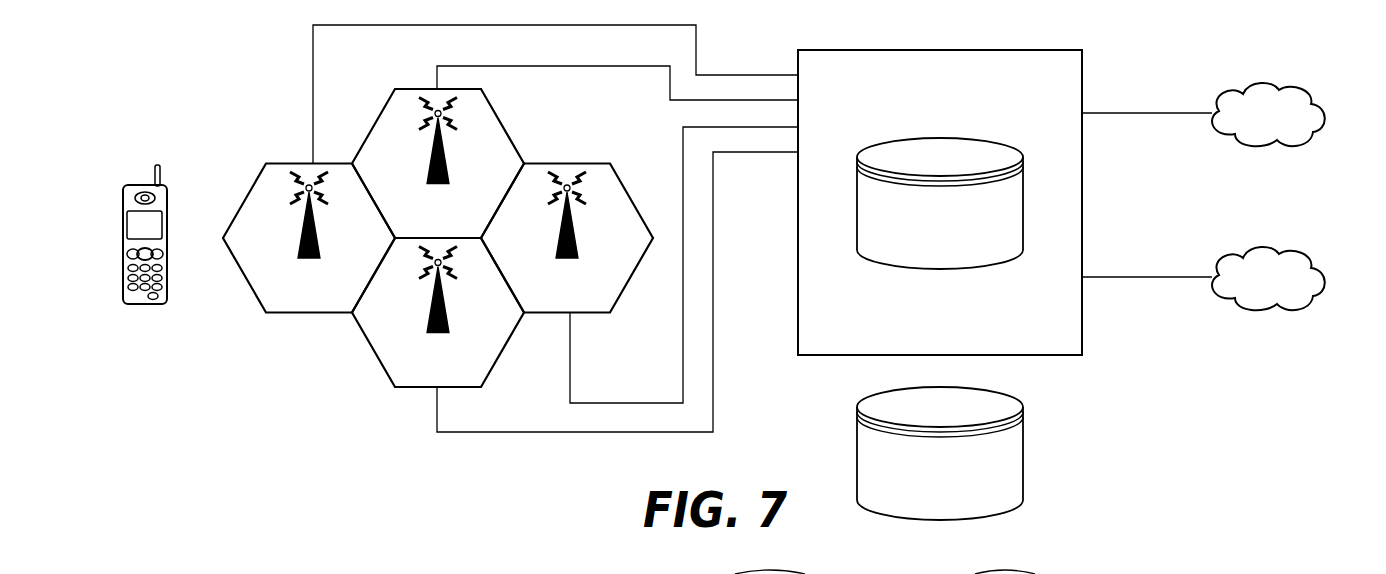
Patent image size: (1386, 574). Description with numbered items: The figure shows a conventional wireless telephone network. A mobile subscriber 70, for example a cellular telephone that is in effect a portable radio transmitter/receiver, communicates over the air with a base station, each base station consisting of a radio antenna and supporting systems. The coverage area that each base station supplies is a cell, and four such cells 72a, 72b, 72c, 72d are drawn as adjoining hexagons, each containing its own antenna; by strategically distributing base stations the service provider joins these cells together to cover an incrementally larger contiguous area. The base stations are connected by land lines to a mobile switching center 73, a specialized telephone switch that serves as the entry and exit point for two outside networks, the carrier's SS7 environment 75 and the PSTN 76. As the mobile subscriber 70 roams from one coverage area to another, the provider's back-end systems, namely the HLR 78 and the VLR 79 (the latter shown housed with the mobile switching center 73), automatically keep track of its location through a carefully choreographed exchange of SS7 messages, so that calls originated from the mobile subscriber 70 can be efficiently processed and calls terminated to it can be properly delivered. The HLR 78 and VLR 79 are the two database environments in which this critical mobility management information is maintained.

The mobile subscriber 70 is at (123, 212).
The cell 72a is at (267, 163).
The cell 72b is at (392, 97).
The cell 72c is at (392, 378).
The cell 72d is at (607, 163).
The mobile switching center 73 is at (1005, 188).
The SS7 environment 75 is at (1293, 147).
The PSTN 76 is at (1293, 310).
The HLR 78 is at (1023, 447).
The VLR 79 is at (940, 137).